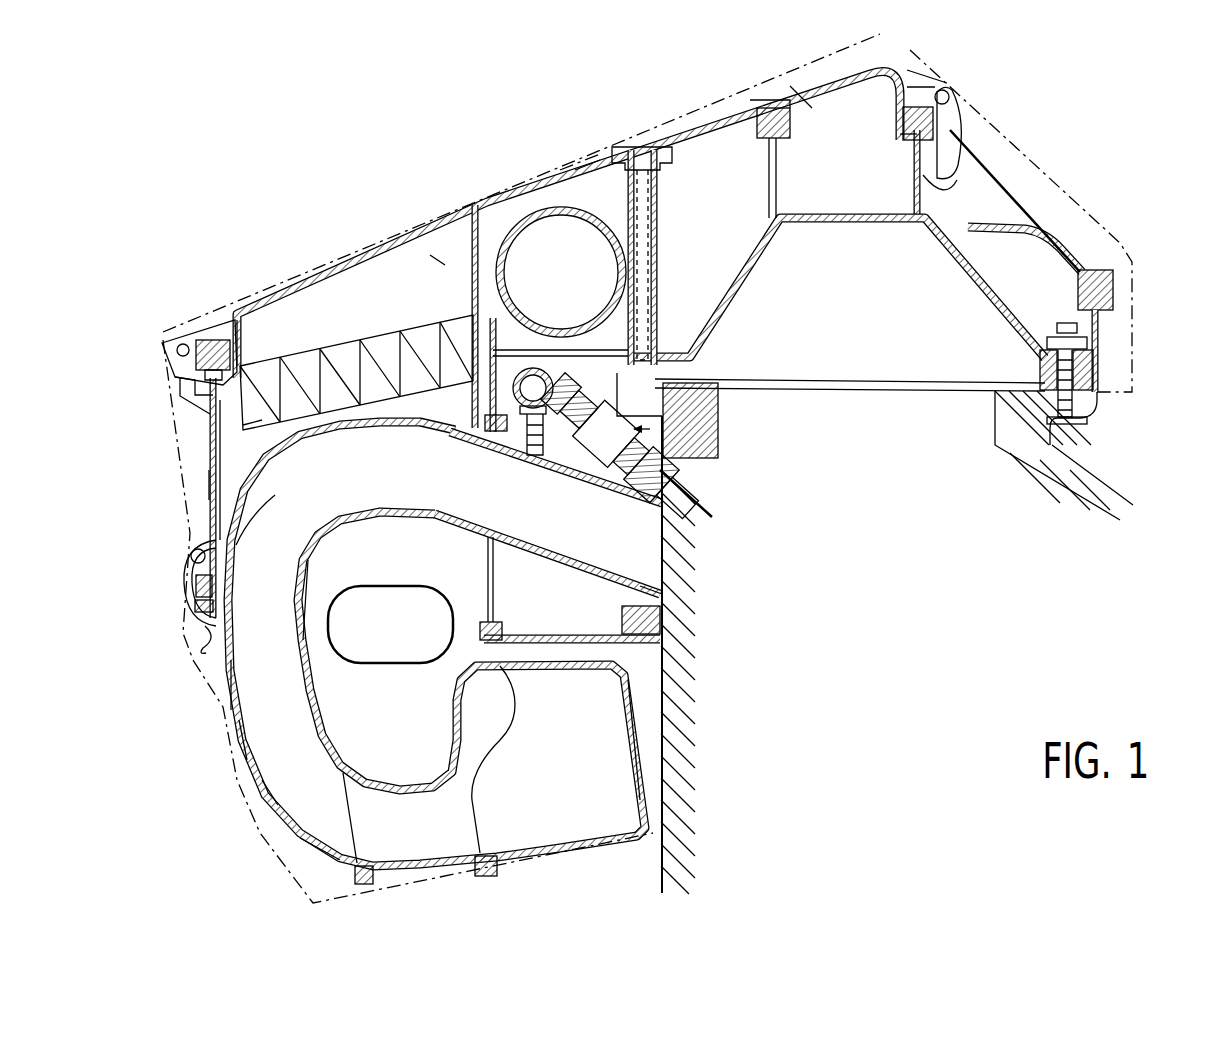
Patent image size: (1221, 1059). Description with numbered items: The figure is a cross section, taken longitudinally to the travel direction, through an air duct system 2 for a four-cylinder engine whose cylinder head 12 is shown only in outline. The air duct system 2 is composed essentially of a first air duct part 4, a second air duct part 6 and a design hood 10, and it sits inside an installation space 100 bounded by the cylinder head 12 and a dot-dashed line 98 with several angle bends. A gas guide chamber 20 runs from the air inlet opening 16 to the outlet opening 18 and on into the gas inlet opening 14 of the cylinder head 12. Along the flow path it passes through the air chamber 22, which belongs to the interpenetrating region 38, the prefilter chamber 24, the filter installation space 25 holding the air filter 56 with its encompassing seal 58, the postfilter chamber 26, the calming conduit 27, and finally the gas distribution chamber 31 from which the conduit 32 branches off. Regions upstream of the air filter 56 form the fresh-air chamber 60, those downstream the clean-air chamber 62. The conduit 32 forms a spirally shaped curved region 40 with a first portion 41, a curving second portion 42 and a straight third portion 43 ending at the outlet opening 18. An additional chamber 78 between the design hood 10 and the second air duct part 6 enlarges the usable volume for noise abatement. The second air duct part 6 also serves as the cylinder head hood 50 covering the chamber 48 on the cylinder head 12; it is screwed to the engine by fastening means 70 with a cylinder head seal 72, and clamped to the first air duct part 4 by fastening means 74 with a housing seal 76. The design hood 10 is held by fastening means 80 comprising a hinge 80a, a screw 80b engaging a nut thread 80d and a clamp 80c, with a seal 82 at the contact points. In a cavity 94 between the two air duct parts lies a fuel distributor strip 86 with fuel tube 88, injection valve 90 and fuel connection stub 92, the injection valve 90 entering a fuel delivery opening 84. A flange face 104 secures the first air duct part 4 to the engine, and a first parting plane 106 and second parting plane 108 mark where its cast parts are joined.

The air duct system 2 is at (727, 800).
The first air duct part 4 is at (258, 800).
The second air duct part 6 is at (205, 445).
The design hood 10 is at (490, 195).
The cylinder head 12 is at (672, 697).
The gas inlet opening 14 is at (668, 573).
The air inlet opening 16 is at (378, 642).
The outlet opening 18 is at (640, 560).
The gas guide chamber 20 is at (266, 703).
The air chamber 22 is at (375, 567).
The prefilter chamber 24 is at (233, 448).
The filter installation space 25 is at (260, 417).
The postfilter chamber 26 is at (388, 287).
The calming conduit 27 is at (548, 282).
The gas distribution chamber 31 is at (560, 769).
The conduit 32 is at (280, 748).
The interpenetrating region 38 is at (206, 485).
The curved region 40 is at (222, 686).
The first portion 41 is at (325, 825).
The second portion 42 is at (250, 527).
The third portion 43 is at (583, 500).
The chamber 48 is at (977, 410).
The cylinder head hood 50 is at (718, 308).
The air filter 56 is at (363, 358).
The seal 58 is at (262, 415).
The fresh-air chamber 60 is at (180, 635).
The clean-air chamber 62 is at (433, 255).
The fastening means 70 is at (1072, 430).
The cylinder head seal 72 is at (833, 385).
The fastening means 74 is at (183, 582).
The housing seal 76 is at (195, 610).
The additional chamber 78 is at (808, 97).
The fastening means 80 is at (173, 375).
The hinge 80a is at (190, 340).
The screw 80b is at (633, 142).
The clamp 80c is at (960, 122).
The nut thread 80d is at (652, 241).
The seal 82 is at (208, 356).
The fuel delivery opening 84 is at (677, 478).
The fuel distributor strip 86 is at (668, 440).
The fuel tube 88 is at (535, 385).
The injection valve 90 is at (705, 500).
The fuel connection stub 92 is at (548, 457).
The cavity 94 is at (685, 412).
The dot-dashed line 98 is at (550, 165).
The installation space 100 is at (588, 147).
The flange face 104 is at (668, 612).
The first parting plane 106 is at (357, 840).
The second parting plane 108 is at (480, 832).